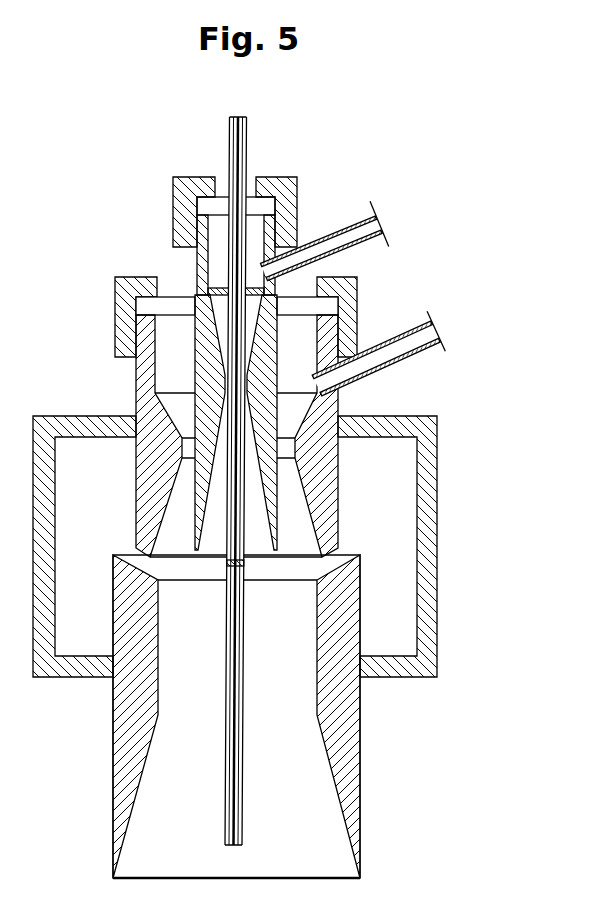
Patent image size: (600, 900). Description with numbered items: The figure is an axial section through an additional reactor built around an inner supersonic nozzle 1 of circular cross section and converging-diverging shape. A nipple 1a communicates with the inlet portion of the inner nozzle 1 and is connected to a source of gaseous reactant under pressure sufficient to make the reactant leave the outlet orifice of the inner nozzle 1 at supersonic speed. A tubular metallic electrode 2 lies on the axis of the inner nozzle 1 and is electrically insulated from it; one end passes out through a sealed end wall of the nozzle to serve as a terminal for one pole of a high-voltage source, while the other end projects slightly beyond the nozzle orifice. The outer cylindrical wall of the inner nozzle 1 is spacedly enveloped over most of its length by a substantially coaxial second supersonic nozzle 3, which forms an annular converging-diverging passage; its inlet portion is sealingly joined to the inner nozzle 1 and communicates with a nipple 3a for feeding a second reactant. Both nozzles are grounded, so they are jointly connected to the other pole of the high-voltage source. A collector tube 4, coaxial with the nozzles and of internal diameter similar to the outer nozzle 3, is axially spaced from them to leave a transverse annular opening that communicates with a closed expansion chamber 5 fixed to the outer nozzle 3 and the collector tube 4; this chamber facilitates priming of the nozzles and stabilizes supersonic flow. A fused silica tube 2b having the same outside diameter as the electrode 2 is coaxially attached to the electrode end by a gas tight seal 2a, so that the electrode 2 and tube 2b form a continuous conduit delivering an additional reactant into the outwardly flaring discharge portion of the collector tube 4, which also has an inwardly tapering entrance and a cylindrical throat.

The inner supersonic nozzle 1 is at (276, 294).
The nipple 1a is at (342, 228).
The tubular metallic electrode 2 is at (236, 253).
The gas tight seal 2a is at (228, 563).
The fused silica tube 2b is at (233, 768).
The second supersonic nozzle 3 is at (148, 396).
The nipple 3a is at (389, 338).
The collector tube 4 is at (345, 767).
The expansion chamber 5 is at (405, 598).